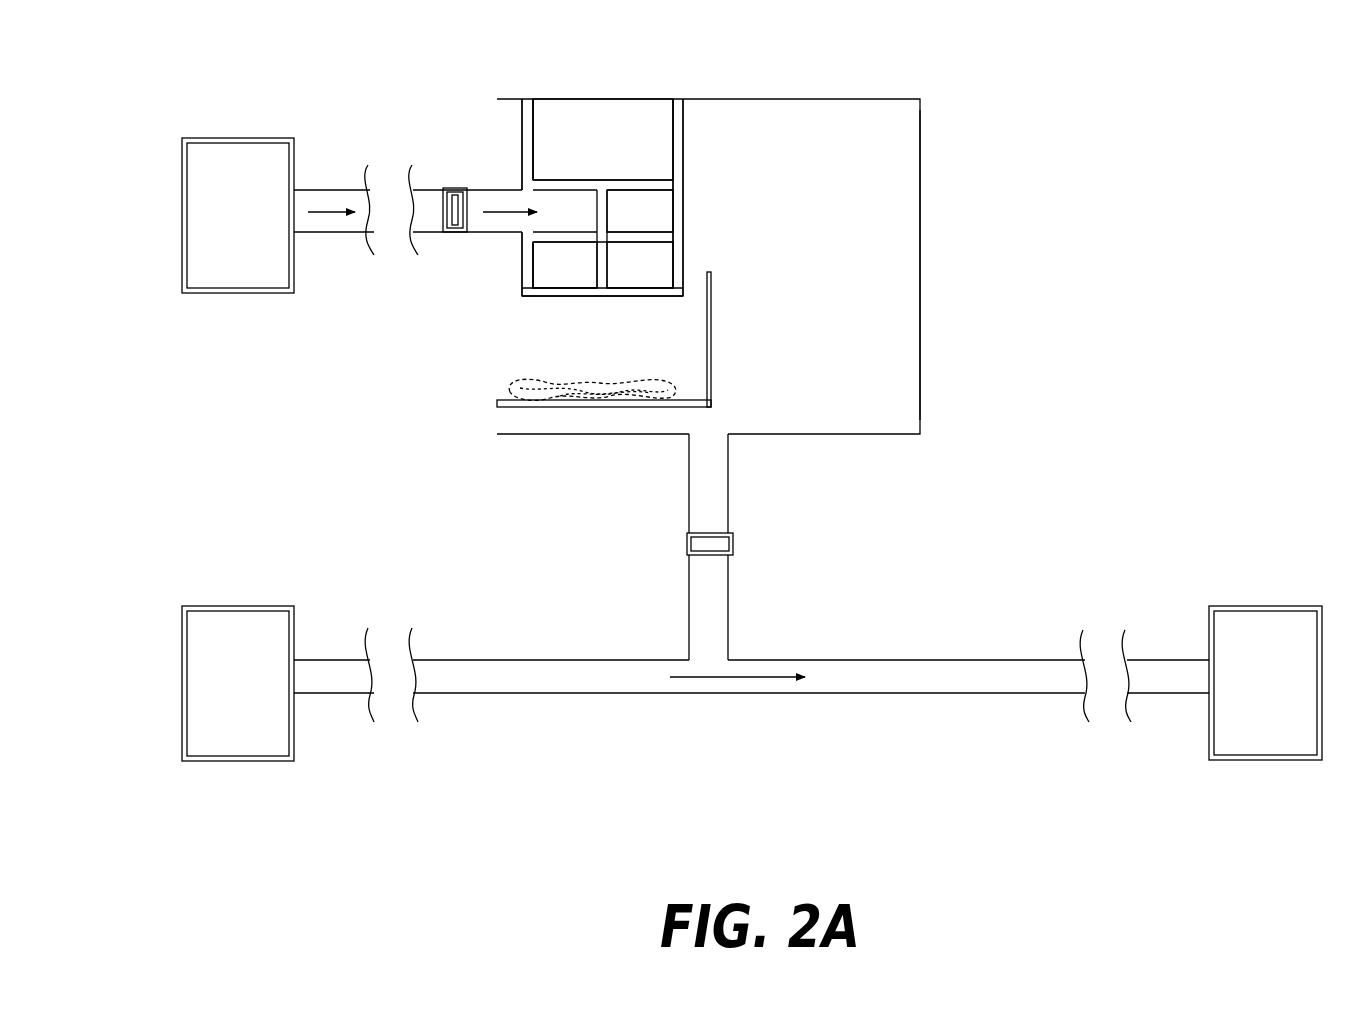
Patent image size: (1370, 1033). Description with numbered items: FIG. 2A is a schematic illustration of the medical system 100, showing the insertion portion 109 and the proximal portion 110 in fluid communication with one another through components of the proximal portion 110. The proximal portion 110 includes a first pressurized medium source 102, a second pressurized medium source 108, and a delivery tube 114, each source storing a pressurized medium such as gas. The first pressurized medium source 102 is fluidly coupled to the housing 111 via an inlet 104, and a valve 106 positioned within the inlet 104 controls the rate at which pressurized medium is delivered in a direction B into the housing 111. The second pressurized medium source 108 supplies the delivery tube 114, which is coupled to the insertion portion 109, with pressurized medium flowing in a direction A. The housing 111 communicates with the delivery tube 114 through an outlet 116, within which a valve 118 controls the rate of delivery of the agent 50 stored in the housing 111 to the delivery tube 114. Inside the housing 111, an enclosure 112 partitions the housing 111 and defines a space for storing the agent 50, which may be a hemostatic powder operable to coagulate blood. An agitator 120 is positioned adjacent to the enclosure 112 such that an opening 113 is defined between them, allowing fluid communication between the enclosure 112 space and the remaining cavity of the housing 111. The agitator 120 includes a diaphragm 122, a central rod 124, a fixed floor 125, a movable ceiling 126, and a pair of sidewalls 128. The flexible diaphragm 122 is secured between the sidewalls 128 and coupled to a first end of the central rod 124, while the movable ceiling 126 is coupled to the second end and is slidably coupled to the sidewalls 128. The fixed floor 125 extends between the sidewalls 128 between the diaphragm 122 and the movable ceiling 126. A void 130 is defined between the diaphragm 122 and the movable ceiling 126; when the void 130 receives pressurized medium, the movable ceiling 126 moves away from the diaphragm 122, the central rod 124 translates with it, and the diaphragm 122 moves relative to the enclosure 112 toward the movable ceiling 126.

The medical system 100 is at (1176, 148).
The first pressurized medium source 102 is at (252, 298).
The inlet 104 is at (328, 182).
The valve 106 is at (457, 205).
The second pressurized medium source 108 is at (255, 773).
The insertion portion 109 is at (1245, 595).
The proximal portion 110 is at (950, 143).
The housing 111 is at (920, 272).
The enclosure 112 is at (690, 402).
The opening 113 is at (697, 288).
The delivery tube 114 is at (565, 694).
The outlet 116 is at (707, 492).
The valve 118 is at (705, 544).
The agitator 120 is at (700, 185).
The diaphragm 122 is at (578, 297).
The central rod 124 is at (597, 264).
The fixed floor 125 is at (638, 245).
The movable ceiling 126 is at (570, 181).
The sidewalls 128 is at (522, 112).
The void 130 is at (650, 205).
The agent 50 is at (513, 403).
The direction A is at (755, 680).
The direction B is at (326, 226).